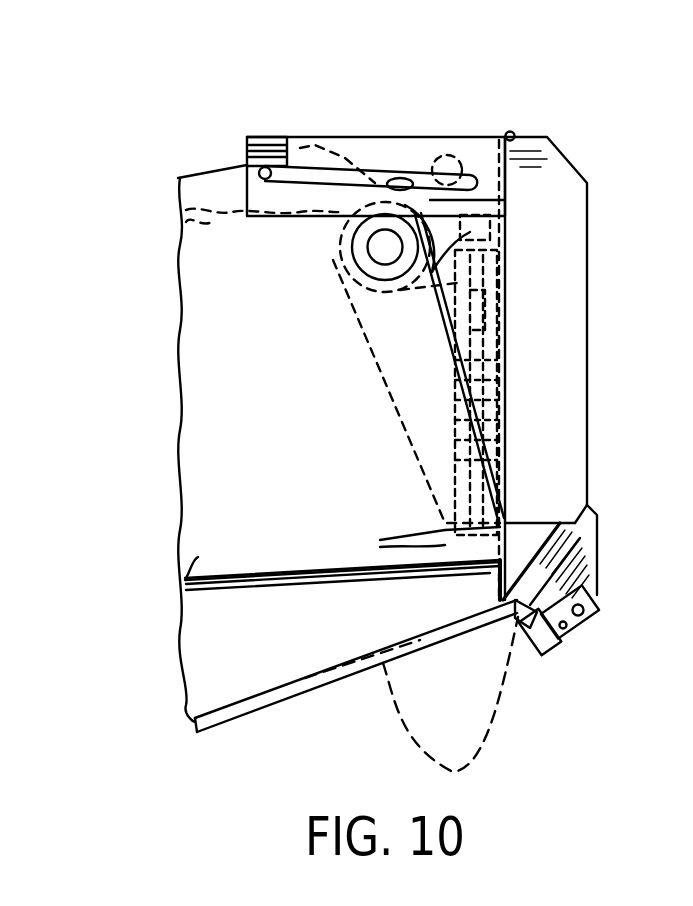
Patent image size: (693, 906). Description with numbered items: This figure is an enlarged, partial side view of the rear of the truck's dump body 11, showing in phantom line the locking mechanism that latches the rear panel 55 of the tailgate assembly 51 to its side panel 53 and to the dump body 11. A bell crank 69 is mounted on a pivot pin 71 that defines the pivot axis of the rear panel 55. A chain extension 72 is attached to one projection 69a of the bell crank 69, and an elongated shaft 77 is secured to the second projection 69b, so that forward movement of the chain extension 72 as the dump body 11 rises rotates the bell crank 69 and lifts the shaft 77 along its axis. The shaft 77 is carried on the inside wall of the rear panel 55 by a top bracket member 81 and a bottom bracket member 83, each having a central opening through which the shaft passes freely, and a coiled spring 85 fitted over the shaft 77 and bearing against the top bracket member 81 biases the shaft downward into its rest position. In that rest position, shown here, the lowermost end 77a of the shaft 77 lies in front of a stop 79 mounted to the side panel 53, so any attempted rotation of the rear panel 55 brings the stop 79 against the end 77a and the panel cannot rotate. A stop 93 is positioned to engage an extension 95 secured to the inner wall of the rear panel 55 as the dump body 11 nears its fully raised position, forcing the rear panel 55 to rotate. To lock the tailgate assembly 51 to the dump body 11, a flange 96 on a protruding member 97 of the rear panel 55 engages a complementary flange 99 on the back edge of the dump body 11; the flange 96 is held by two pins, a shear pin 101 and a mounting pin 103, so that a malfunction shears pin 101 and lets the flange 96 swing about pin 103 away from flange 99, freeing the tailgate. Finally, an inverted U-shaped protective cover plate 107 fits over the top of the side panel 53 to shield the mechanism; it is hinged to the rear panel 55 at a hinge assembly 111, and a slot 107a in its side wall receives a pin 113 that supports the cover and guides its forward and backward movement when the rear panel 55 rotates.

The dump body 11 is at (305, 675).
The tailgate assembly 51 is at (208, 162).
The side panel 53 is at (192, 578).
The rear panel 55 is at (578, 173).
The bell crank 69 is at (505, 198).
The projection of bell crank 69a is at (443, 160).
The second projection of bell crank 69b is at (505, 255).
The pivot pin 71 is at (377, 250).
The chain extension 72 is at (237, 218).
The elongated shaft 77 is at (465, 477).
The lowermost end of shaft 77a is at (485, 545).
The stop 79 is at (485, 578).
The top bracket member 81 is at (505, 328).
The bottom bracket member 83 is at (445, 500).
The coiled spring 85 is at (520, 408).
The stop 93 is at (438, 295).
The extension 95 is at (400, 290).
The flange 96 is at (565, 645).
The protruding member 97 is at (590, 542).
The complementary flange 99 is at (520, 632).
The shear pin 101 is at (567, 627).
The mounting pin 103 is at (590, 612).
The protective cover plate 107 is at (457, 138).
The slot 107a is at (287, 166).
The hinge assembly 111 is at (513, 136).
The pin 113 is at (262, 140).